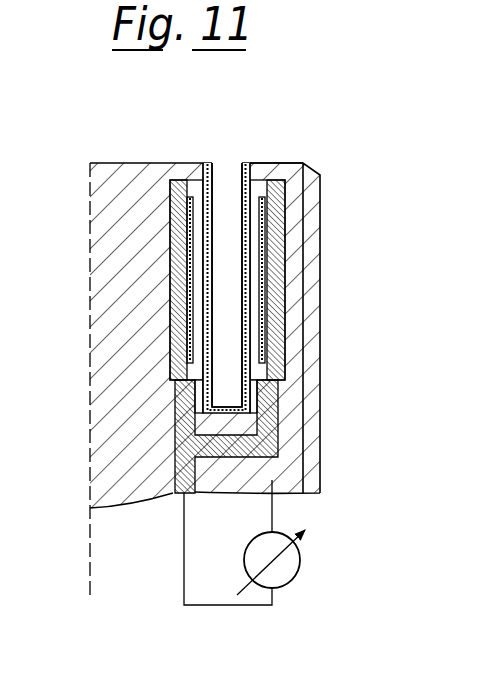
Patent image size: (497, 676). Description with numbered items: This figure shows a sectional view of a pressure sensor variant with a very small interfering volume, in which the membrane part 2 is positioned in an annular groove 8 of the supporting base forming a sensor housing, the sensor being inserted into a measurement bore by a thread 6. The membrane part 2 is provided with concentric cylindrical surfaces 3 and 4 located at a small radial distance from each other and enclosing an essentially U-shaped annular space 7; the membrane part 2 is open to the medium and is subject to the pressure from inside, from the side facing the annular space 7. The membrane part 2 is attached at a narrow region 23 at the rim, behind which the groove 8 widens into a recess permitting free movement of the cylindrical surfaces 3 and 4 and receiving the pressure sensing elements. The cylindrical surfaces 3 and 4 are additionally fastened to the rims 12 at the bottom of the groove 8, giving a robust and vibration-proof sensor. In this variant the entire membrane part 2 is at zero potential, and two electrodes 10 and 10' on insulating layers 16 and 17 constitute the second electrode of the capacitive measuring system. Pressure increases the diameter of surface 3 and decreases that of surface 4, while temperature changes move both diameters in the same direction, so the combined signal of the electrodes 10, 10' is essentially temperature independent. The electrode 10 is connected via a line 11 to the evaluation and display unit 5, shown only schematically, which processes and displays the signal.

The membrane part 2 is at (207, 160).
The narrow region 23 is at (262, 162).
The cylindrical surface 3 is at (243, 212).
The cylindrical surface 4 is at (211, 277).
The annular space 7 is at (230, 232).
The annular groove 8 is at (172, 236).
The insulating layer 17 is at (186, 272).
The electrode 10' is at (111, 280).
The insulating layer 16 is at (272, 267).
The thread 6 is at (308, 307).
The electrode 10 is at (325, 282).
The rims 12 is at (253, 406).
The line 11 is at (182, 526).
The evaluation and display unit 5 is at (290, 560).